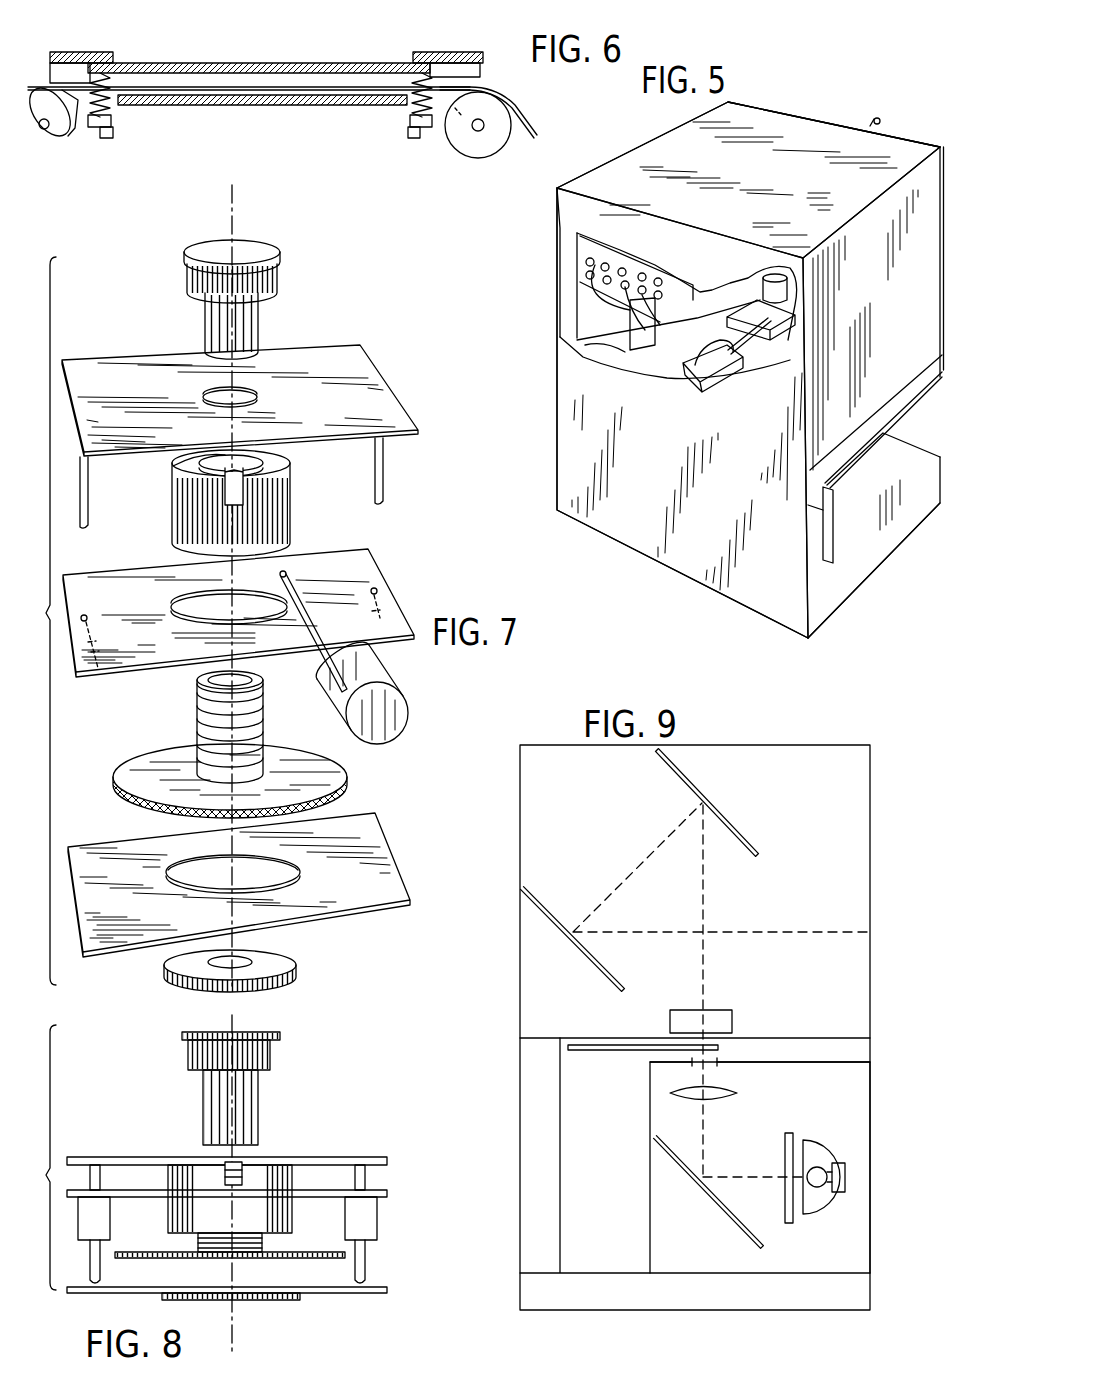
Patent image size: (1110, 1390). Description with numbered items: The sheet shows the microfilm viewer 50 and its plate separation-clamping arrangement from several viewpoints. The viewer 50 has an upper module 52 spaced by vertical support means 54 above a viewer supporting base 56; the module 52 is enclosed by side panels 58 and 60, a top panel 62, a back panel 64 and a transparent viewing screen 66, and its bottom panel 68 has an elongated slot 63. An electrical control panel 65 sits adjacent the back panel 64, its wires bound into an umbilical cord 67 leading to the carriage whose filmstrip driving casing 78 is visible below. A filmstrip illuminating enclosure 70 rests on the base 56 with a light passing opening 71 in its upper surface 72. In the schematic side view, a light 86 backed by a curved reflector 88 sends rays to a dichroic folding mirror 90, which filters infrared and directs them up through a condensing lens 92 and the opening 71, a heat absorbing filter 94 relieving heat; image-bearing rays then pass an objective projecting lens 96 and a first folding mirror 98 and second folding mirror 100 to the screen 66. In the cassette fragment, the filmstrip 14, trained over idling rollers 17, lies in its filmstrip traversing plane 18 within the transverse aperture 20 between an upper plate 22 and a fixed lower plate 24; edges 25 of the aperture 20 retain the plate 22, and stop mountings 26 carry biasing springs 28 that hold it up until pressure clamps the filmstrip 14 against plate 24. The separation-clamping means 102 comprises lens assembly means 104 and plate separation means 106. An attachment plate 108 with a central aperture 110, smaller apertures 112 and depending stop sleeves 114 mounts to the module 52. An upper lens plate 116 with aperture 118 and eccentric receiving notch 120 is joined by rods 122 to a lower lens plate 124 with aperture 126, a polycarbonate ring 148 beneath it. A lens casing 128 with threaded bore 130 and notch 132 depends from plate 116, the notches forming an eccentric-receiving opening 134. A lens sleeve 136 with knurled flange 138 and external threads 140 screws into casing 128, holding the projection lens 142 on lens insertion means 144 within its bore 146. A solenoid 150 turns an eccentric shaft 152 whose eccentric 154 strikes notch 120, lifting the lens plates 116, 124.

In FIG. 6, the filmstrip 14 is at (533, 137).
In FIG. 9, the filmstrip 14 is at (620, 1050).
In FIG. 6, the idling rollers 17 is at (477, 150).
In FIG. 6, the filmstrip traversing plane 18 is at (227, 87).
In FIG. 6, the transverse aperture 20 is at (309, 51).
In FIG. 6, the upper plate 22 is at (360, 63).
In FIG. 6, the lower plate 24 is at (278, 104).
In FIG. 6, the edges of the aperture 25 is at (82, 52).
In FIG. 6, the stop mountings 26 is at (106, 138).
In FIG. 6, the upper plate biasing springs 28 is at (503, 80).
In FIG. 5, the microfilm viewer 50 is at (842, 124).
In FIG. 5, the upper module 52 is at (884, 121).
In FIG. 9, the upper module 52 is at (882, 792).
In FIG. 5, the vertical support means 54 is at (808, 520).
In FIG. 5, the viewer supporting base 56 is at (890, 535).
In FIG. 5, the side panel 58 is at (646, 140).
In FIG. 5, the side panel 60 is at (910, 311).
In FIG. 5, the top panel 62 is at (771, 171).
In FIG. 5, the elongated slot 63 is at (665, 382).
In FIG. 5, the back panel 64 is at (668, 256).
In FIG. 5, the electrical control panel 65 is at (583, 257).
In FIG. 5, the viewing screen 66 is at (816, 116).
In FIG. 9, the viewing screen 66 is at (872, 865).
In FIG. 5, the umbilical cord 67 is at (608, 357).
In FIG. 5, the bottom panel 68 is at (898, 392).
In FIG. 9, the bottom panel 68 is at (783, 1037).
In FIG. 9, the filmstrip illuminating enclosure 70 is at (872, 1133).
In FIG. 9, the light passing opening 71 is at (712, 1064).
In FIG. 9, the upper surface 72 is at (845, 1060).
In FIG. 5, the filmstrip driving casing 78 is at (848, 511).
In FIG. 9, the light 86 is at (810, 1168).
In FIG. 9, the curved reflector 88 is at (823, 1207).
In FIG. 9, the dichroic folding mirror 90 is at (745, 1235).
In FIG. 9, the condensing lens 92 is at (677, 1095).
In FIG. 9, the heat absorbing filter 94 is at (785, 1145).
In FIG. 9, the objective projecting lens 96 is at (720, 1013).
In FIG. 9, the first folding mirror 98 is at (603, 967).
In FIG. 9, the second folding mirror 100 is at (690, 778).
In FIG. 5, the separation-clamping means 102 is at (744, 288).
In FIG. 8, the separation-clamping means 102 is at (403, 1231).
In FIG. 5, the lens assembly means 104 is at (790, 286).
In FIG. 5, the plate separation means 106 is at (740, 372).
In FIG. 7, the plate separation means 106 is at (420, 732).
In FIG. 7, the attachment plate 108 is at (360, 579).
In FIG. 8, the attachment plate 108 is at (388, 1197).
In FIG. 7, the central aperture 110 is at (191, 590).
In FIG. 7, the smaller apertures 112 is at (109, 598).
In FIG. 7, the stop sleeves 114 is at (380, 597).
In FIG. 8, the stop sleeves 114 is at (105, 1237).
In FIG. 7, the upper lens plate 116 is at (332, 409).
In FIG. 8, the upper lens plate 116 is at (227, 1161).
In FIG. 7, the aperture of the upper lens plate 118 is at (215, 393).
In FIG. 8, the aperture of the upper lens plate 118 is at (342, 1157).
In FIG. 7, the eccentric receiving notch 120 is at (285, 465).
In FIG. 7, the rods 122 is at (386, 465).
In FIG. 8, the rods 122 is at (102, 1183).
In FIG. 7, the lower lens plate 124 is at (355, 894).
In FIG. 8, the lower lens plate 124 is at (387, 1292).
In FIG. 7, the aperture of the lower lens plate 126 is at (188, 866).
In FIG. 7, the lens casing 128 is at (290, 498).
In FIG. 8, the lens casing 128 is at (292, 1180).
In FIG. 7, the threaded bore 130 is at (193, 458).
In FIG. 7, the lens casing notch 132 is at (225, 498).
In FIG. 8, the eccentric-receiving opening 134 is at (225, 1182).
In FIG. 7, the lens sleeve 136 is at (263, 730).
In FIG. 8, the lens sleeve 136 is at (262, 1245).
In FIG. 7, the knurled flange 138 is at (348, 781).
In FIG. 8, the knurled flange 138 is at (187, 1262).
In FIG. 7, the external threads 140 is at (197, 719).
In FIG. 8, the external threads 140 is at (280, 1033).
In FIG. 7, the projection lens 142 is at (280, 255).
In FIG. 7, the lens insertion means 144 is at (257, 318).
In FIG. 8, the lens insertion means 144 is at (258, 1102).
In FIG. 7, the bore of the lens sleeve 146 is at (255, 677).
In FIG. 7, the polycarbonate ring 148 is at (292, 972).
In FIG. 8, the polycarbonate ring 148 is at (293, 1301).
In FIG. 7, the solenoid 150 is at (405, 680).
In FIG. 5, the eccentric shaft 152 is at (773, 368).
In FIG. 7, the eccentric shaft 152 is at (321, 609).
In FIG. 7, the eccentric 154 is at (290, 558).